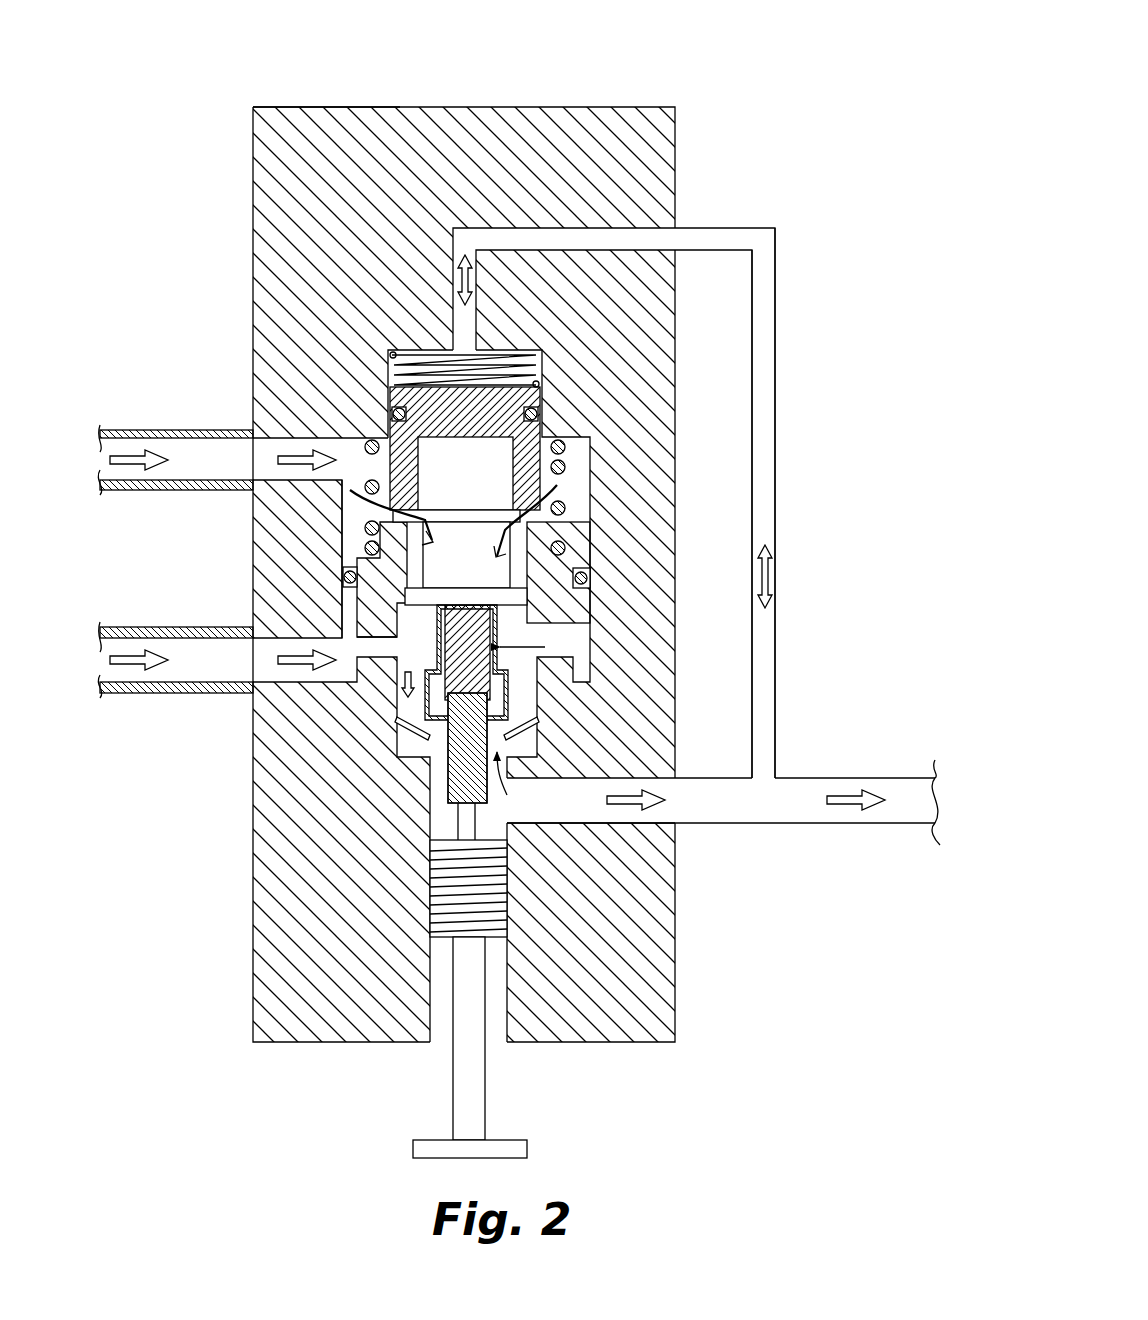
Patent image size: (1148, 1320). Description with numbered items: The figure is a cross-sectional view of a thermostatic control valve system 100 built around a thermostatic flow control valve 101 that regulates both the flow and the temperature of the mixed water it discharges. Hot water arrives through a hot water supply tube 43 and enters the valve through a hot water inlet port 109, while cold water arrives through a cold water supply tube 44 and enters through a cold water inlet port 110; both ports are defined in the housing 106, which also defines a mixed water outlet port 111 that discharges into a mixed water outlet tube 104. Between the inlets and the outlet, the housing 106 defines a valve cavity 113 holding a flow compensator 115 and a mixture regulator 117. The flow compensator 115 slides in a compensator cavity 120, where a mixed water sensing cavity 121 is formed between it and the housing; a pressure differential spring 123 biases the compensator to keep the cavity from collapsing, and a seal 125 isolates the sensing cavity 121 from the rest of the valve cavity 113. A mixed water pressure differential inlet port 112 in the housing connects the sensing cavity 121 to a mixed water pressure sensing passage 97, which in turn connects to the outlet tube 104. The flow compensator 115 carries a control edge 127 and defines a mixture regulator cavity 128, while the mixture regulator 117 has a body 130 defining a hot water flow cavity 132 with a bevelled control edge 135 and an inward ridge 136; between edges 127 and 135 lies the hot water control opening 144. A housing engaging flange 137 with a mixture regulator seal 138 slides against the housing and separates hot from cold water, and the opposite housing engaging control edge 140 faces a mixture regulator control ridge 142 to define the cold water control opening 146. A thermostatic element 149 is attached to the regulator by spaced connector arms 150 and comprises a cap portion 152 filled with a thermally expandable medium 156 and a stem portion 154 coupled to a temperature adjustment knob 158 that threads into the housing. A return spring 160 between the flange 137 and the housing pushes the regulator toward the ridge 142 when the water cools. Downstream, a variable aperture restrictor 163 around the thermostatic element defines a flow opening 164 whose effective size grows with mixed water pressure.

The thermostatic control valve system 100 is at (748, 72).
The thermostatic flow control valve 101 is at (677, 180).
The housing 106 is at (288, 106).
The mixed water pressure differential inlet port 112 is at (583, 228).
The mixed water pressure sensing passage 97 is at (777, 398).
The mixed water outlet tube 104 is at (768, 824).
The mixed water outlet port 111 is at (655, 825).
The hot water supply tube 43 is at (165, 428).
The hot water inlet port 109 is at (280, 436).
The cold water supply tube 44 is at (130, 627).
The cold water inlet port 110 is at (277, 639).
The valve cavity 113 is at (343, 478).
The flow compensator 115 is at (541, 385).
The mixture regulator 117 is at (580, 552).
The compensator cavity 120 is at (381, 368).
The mixed water sensing cavity 121 is at (548, 362).
The pressure differential spring 123 is at (541, 373).
The seal 125 is at (542, 402).
The mixture regulator engaging control edge 127 is at (566, 451).
The mixture regulator cavity 128 is at (490, 474).
The mixture regulator body 130 is at (528, 597).
The hot water flow cavity 132 is at (532, 612).
The flow compensator engaging control edge 135 is at (566, 509).
The ridge 136 is at (380, 573).
The housing engaging flange 137 is at (343, 582).
The mixture regulator seal 138 is at (566, 549).
The housing engaging control edge 140 is at (372, 640).
The mixture regulator control ridge 142 is at (415, 612).
The hot water control opening 144 is at (390, 510).
The cold water control opening 146 is at (546, 647).
The thermostatic element 149 is at (533, 727).
The connector arms 150 is at (440, 700).
The cap portion 152 is at (515, 712).
The stem portion 154 is at (432, 878).
The thermally expandable medium 156 is at (460, 790).
The temperature adjustment knob 158 is at (462, 1105).
The return spring 160 is at (388, 378).
The restrictor 163 is at (525, 784).
The flow opening 164 is at (505, 800).